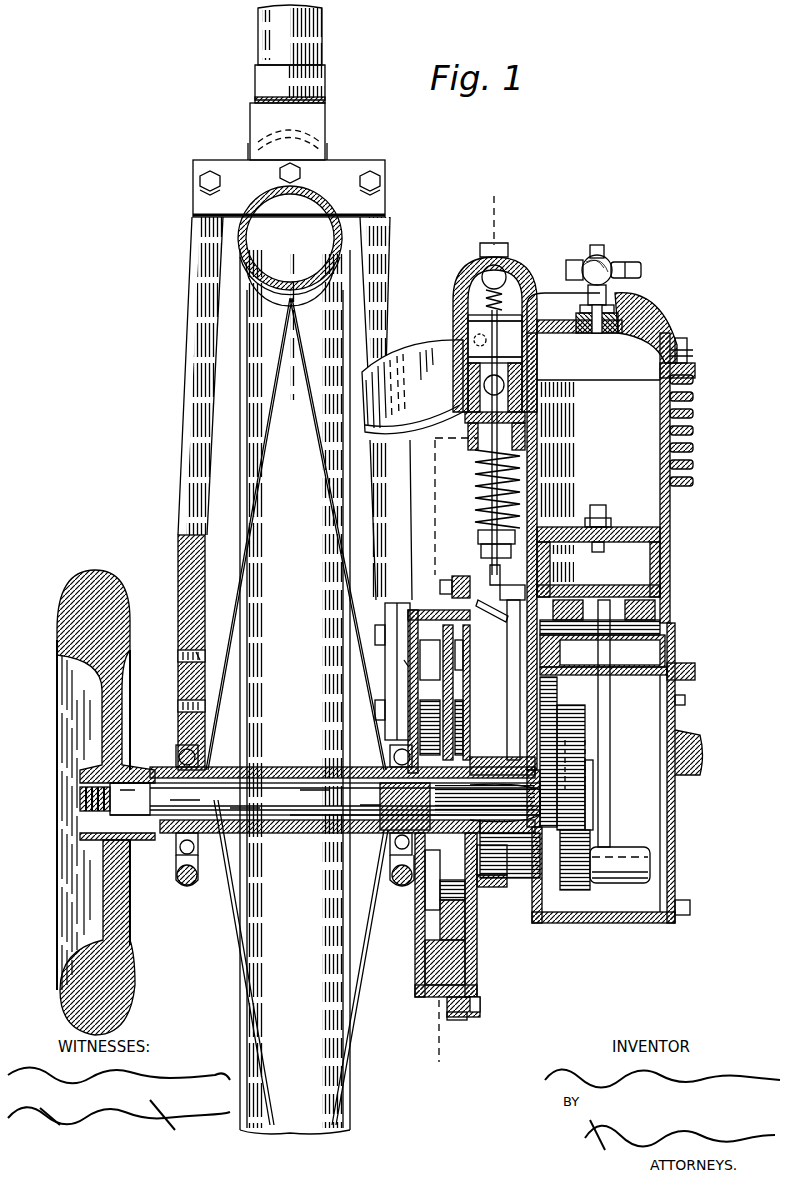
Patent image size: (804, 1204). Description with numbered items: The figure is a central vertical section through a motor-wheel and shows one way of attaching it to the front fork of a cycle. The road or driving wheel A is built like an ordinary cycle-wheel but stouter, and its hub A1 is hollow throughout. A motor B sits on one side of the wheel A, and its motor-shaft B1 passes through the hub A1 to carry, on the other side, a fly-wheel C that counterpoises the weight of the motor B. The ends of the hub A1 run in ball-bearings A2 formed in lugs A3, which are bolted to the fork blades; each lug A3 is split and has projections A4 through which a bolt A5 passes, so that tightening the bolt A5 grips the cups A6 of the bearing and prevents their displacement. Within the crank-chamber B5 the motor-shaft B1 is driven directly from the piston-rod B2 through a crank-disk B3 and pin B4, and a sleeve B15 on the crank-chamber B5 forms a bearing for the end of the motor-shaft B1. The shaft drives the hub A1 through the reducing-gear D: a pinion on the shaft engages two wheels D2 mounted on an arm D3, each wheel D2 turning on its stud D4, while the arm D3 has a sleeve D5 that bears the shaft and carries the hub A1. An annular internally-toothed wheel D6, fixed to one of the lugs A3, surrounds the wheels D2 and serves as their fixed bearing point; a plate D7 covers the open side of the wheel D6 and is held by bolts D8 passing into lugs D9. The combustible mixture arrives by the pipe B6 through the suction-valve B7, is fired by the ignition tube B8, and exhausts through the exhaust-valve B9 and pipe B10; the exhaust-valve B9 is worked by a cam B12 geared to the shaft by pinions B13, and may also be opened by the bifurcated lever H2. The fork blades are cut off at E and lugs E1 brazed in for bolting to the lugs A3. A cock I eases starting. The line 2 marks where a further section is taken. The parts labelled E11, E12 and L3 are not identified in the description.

The road or driving wheel A is at (290, 569).
The hub A1 is at (342, 790).
The ball-bearings A2 is at (378, 805).
The lugs A3 is at (196, 658).
The projections A4 is at (412, 900).
The bolt A5 is at (190, 885).
The cups A6 is at (206, 745).
The motor B is at (672, 566).
The motor-shaft B1 is at (310, 806).
The piston-rod B2 is at (612, 803).
The crank-disk B3 is at (575, 722).
The pin B4 is at (600, 918).
The crank-chamber B5 is at (650, 918).
The pipe B6 is at (505, 268).
The suction-valve B7 is at (472, 300).
The ignition tube B8 is at (468, 345).
The exhaust-valve B9 is at (510, 345).
The exhaust pipe B10 is at (520, 382).
The cam B12 is at (558, 696).
The pinions B13 is at (560, 790).
The sleeve or hollow extension B15 is at (505, 850).
The fly-wheel C is at (100, 572).
The reducing-gear D is at (436, 578).
The wheels D2 is at (490, 963).
The arm D3 is at (440, 714).
The stud or pivot D4 is at (478, 900).
The extension or sleeve D5 is at (325, 845).
The annular internally-toothed wheel D6 is at (420, 1010).
The plate D7 is at (477, 924).
The bolts D8 is at (480, 1003).
The lugs D9 is at (455, 1020).
The cut-off ends of fork blades E is at (386, 408).
The lugs E1 is at (386, 627).
The frame strut upper part E11 is at (180, 585).
The cap E12 is at (412, 387).
The lever H2 is at (492, 610).
The cock I is at (612, 262).
The lever L3 is at (412, 905).
The section line 2 is at (463, 630).